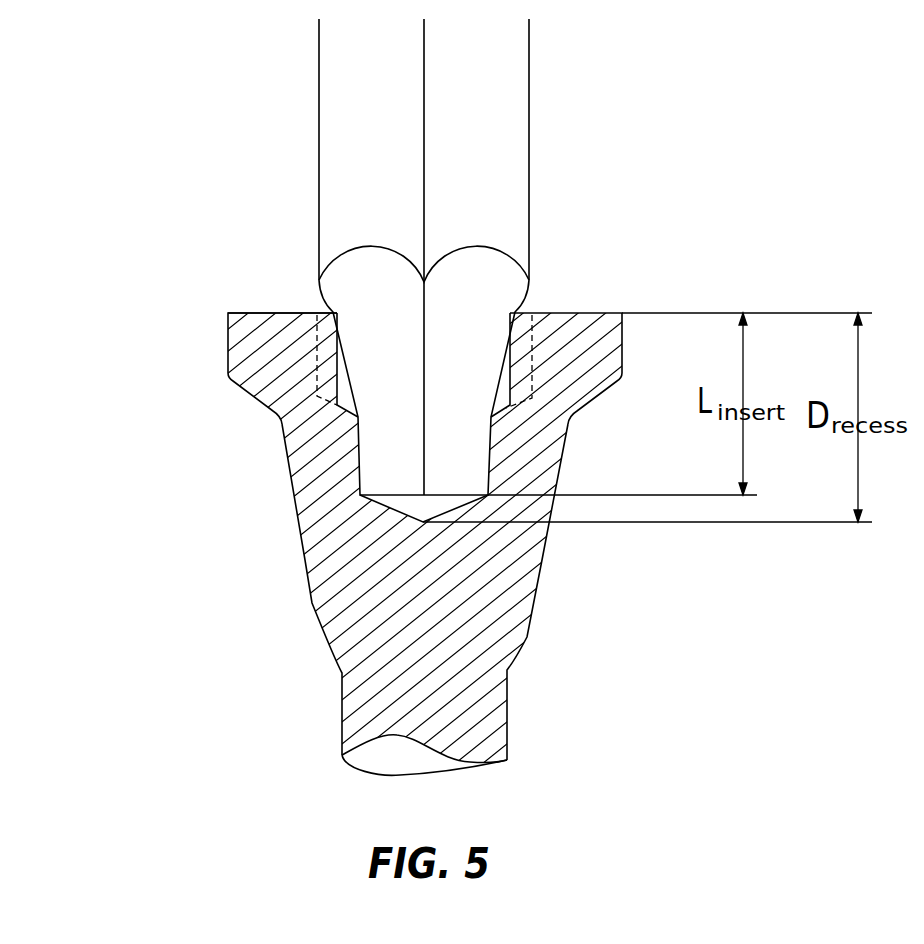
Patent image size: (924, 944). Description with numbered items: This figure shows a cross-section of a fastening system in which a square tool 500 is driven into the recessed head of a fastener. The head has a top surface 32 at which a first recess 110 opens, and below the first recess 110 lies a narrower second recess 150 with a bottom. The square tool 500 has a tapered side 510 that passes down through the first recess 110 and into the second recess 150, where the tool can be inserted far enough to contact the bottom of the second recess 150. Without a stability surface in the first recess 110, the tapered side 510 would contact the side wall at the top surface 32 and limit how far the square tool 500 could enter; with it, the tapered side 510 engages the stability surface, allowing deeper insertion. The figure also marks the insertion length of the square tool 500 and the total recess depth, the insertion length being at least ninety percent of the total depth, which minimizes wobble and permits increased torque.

The top surface 32 is at (253, 312).
The first recess 110 is at (298, 361).
The second recess 150 is at (334, 467).
The square tool 500 is at (465, 368).
The tapered side 510 is at (520, 300).